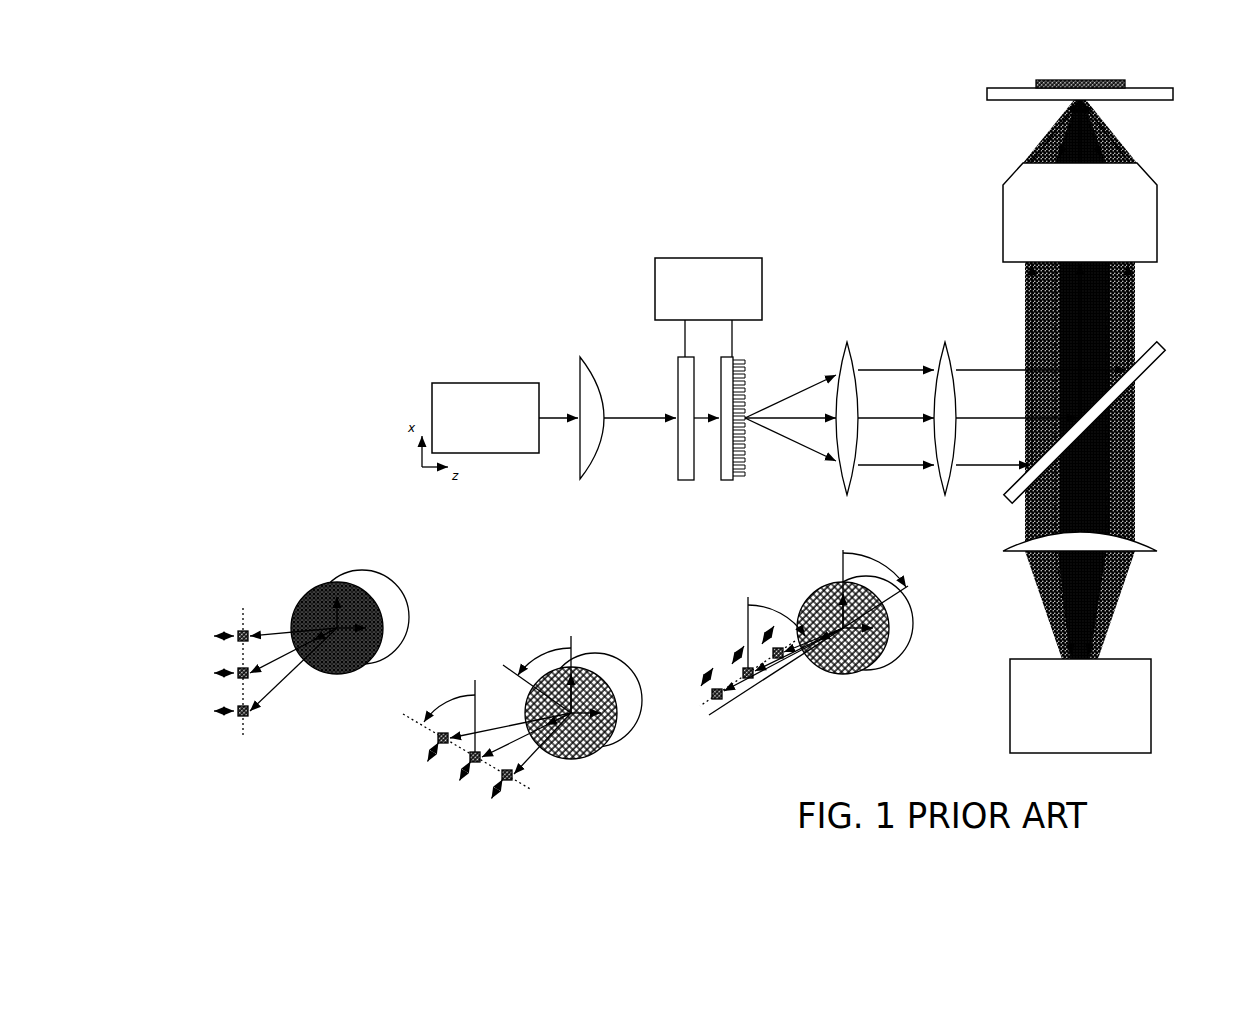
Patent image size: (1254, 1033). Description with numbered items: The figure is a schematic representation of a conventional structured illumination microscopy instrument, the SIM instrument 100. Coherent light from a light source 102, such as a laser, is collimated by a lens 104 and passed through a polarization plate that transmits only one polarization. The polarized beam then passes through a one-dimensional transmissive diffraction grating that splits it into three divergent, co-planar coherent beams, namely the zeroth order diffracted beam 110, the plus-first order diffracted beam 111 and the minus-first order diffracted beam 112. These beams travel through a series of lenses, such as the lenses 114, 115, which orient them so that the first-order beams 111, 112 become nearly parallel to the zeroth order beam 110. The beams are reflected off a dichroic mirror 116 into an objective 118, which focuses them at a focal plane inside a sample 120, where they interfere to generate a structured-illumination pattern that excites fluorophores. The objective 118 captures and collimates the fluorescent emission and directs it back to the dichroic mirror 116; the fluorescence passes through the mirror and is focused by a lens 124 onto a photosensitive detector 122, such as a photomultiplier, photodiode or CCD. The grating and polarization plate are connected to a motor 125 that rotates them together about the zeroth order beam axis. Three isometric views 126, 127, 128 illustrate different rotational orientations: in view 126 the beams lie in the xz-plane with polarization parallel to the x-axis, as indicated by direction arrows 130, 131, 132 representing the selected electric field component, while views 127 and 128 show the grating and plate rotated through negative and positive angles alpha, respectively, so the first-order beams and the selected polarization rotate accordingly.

The SIM instrument 100 is at (512, 183).
The light source 102 is at (490, 390).
The lens 104 is at (587, 356).
The 0th order diffracted beam 110 is at (783, 421).
The +1st order diffracted beam 111 is at (763, 402).
The -1st order diffracted beam 112 is at (773, 438).
The lens 114 is at (852, 353).
The lens 115 is at (948, 353).
The dichroic mirror 116 is at (1143, 373).
The objective 118 is at (1080, 212).
The sample 120 is at (1066, 80).
The photosensitive detector 122 is at (1080, 706).
The lens 124 is at (1145, 528).
The motor 125 is at (725, 267).
The isometric view 126 is at (335, 623).
The isometric view 127 is at (549, 698).
The isometric view 128 is at (837, 630).
The direction arrow 130 is at (223, 630).
The direction arrow 131 is at (230, 671).
The direction arrow 132 is at (230, 708).